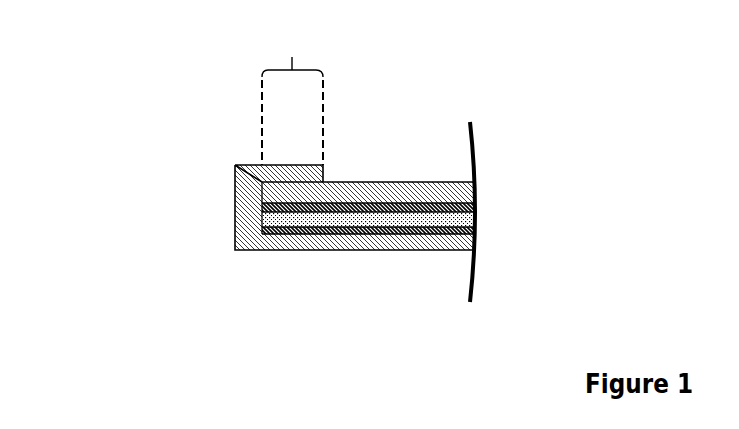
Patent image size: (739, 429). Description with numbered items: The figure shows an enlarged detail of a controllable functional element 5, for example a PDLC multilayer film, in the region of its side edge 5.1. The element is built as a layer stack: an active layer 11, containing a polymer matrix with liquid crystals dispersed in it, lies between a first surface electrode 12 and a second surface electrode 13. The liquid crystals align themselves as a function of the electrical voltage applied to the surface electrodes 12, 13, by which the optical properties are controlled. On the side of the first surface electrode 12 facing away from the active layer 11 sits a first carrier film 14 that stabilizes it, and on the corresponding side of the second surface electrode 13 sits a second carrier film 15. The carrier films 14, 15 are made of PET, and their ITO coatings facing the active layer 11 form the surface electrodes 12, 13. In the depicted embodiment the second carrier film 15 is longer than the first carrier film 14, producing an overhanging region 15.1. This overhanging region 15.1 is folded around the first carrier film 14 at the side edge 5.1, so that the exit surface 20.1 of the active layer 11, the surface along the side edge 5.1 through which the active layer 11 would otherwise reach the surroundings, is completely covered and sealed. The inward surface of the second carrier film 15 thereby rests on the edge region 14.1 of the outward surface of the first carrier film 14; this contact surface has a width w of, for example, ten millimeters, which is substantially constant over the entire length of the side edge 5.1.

The functional element 5 is at (431, 215).
The side edge 5.1 is at (141, 220).
The active layer 11 is at (477, 217).
The first surface electrode 12 is at (467, 207).
The second surface electrode 13 is at (473, 232).
The first carrier film 14 is at (447, 192).
The edge region 14.1 is at (302, 170).
The second carrier film 15 is at (403, 256).
The overhanging region 15.1 is at (222, 154).
The exit surface 20.1 is at (235, 225).